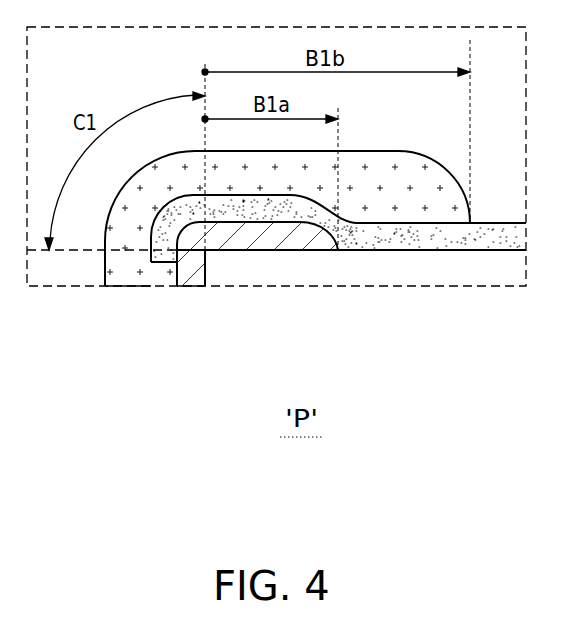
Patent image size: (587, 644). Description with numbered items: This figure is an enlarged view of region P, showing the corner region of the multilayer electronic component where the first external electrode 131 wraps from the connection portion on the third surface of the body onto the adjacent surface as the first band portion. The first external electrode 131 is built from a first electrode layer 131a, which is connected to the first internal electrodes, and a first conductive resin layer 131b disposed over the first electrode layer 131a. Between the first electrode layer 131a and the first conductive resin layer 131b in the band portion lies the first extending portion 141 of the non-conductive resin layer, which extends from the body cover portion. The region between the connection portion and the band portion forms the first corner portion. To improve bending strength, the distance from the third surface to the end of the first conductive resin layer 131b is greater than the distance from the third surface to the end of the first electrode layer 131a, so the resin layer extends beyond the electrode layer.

The first external electrode 131 is at (212, 350).
The first electrode layer 131a is at (193, 287).
The first conductive resin layer 131b is at (130, 287).
The first extending portion 141 is at (285, 210).